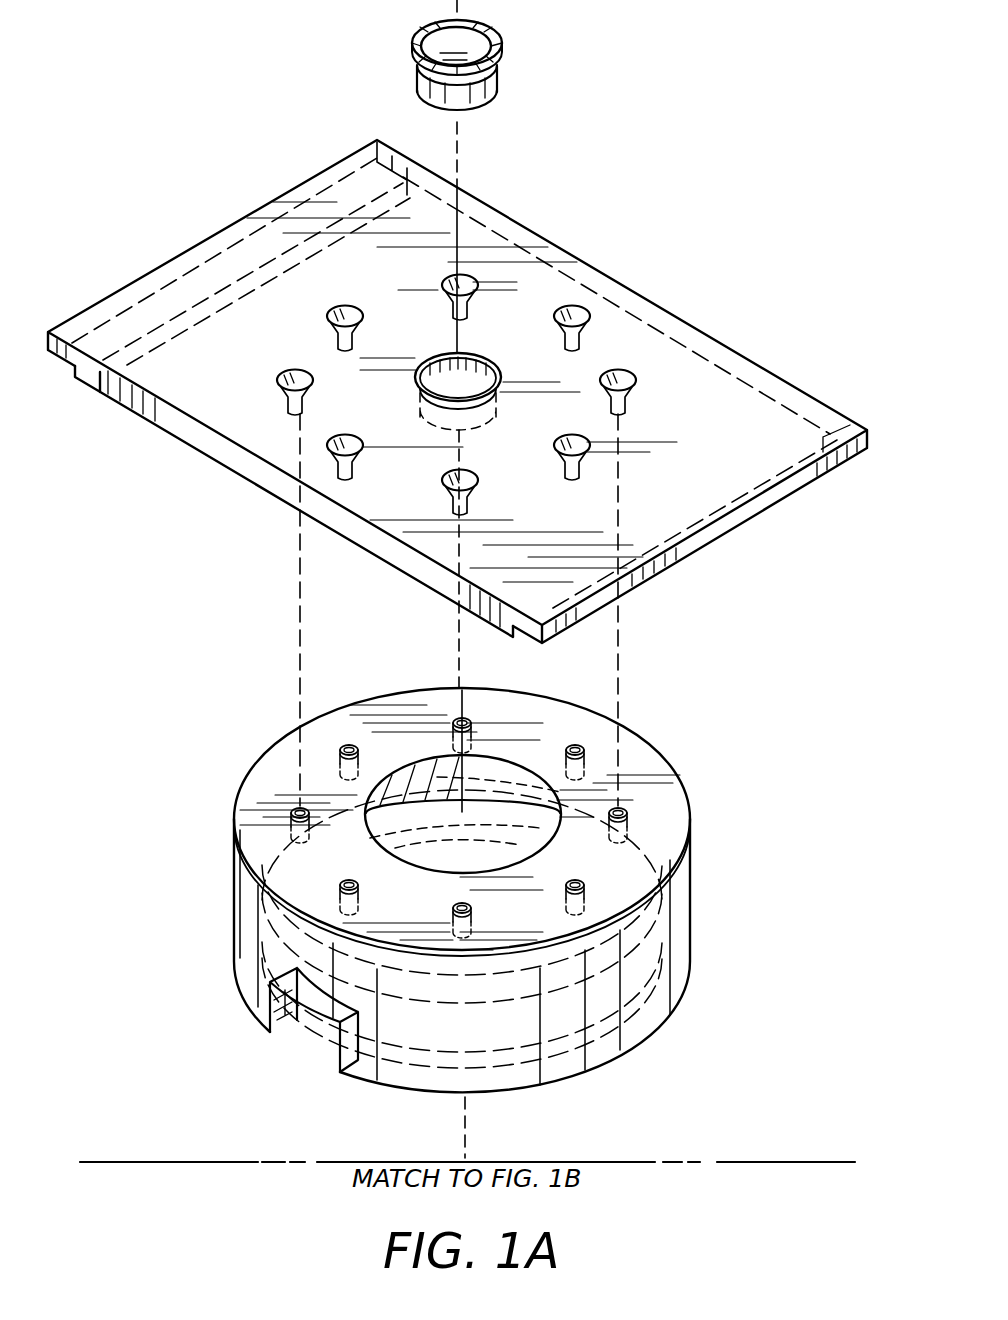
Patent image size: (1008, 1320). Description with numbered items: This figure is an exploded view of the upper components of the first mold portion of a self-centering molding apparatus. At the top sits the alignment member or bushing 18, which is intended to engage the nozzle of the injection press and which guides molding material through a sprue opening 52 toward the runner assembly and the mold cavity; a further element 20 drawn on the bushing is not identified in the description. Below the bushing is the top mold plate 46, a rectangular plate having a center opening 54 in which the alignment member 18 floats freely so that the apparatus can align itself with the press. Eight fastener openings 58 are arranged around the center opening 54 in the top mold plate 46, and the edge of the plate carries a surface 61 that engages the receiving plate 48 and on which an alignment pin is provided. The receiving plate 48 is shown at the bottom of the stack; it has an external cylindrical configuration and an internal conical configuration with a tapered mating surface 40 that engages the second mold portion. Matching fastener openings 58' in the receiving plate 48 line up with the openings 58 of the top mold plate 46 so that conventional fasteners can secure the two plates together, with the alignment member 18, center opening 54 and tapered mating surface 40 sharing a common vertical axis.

The alignment member or bushing 18 is at (492, 46).
The lower rim of cap 20 is at (416, 113).
The sprue opening 52 is at (498, 110).
The center opening 54 is at (473, 353).
The top mold plate 46 is at (636, 312).
The fastener openings 58 is at (541, 395).
The surface of the top mold plate 61 is at (213, 458).
The tapered mating surface 40 is at (492, 771).
The fastener openings 58' is at (514, 828).
The receiving plate 48 is at (668, 825).